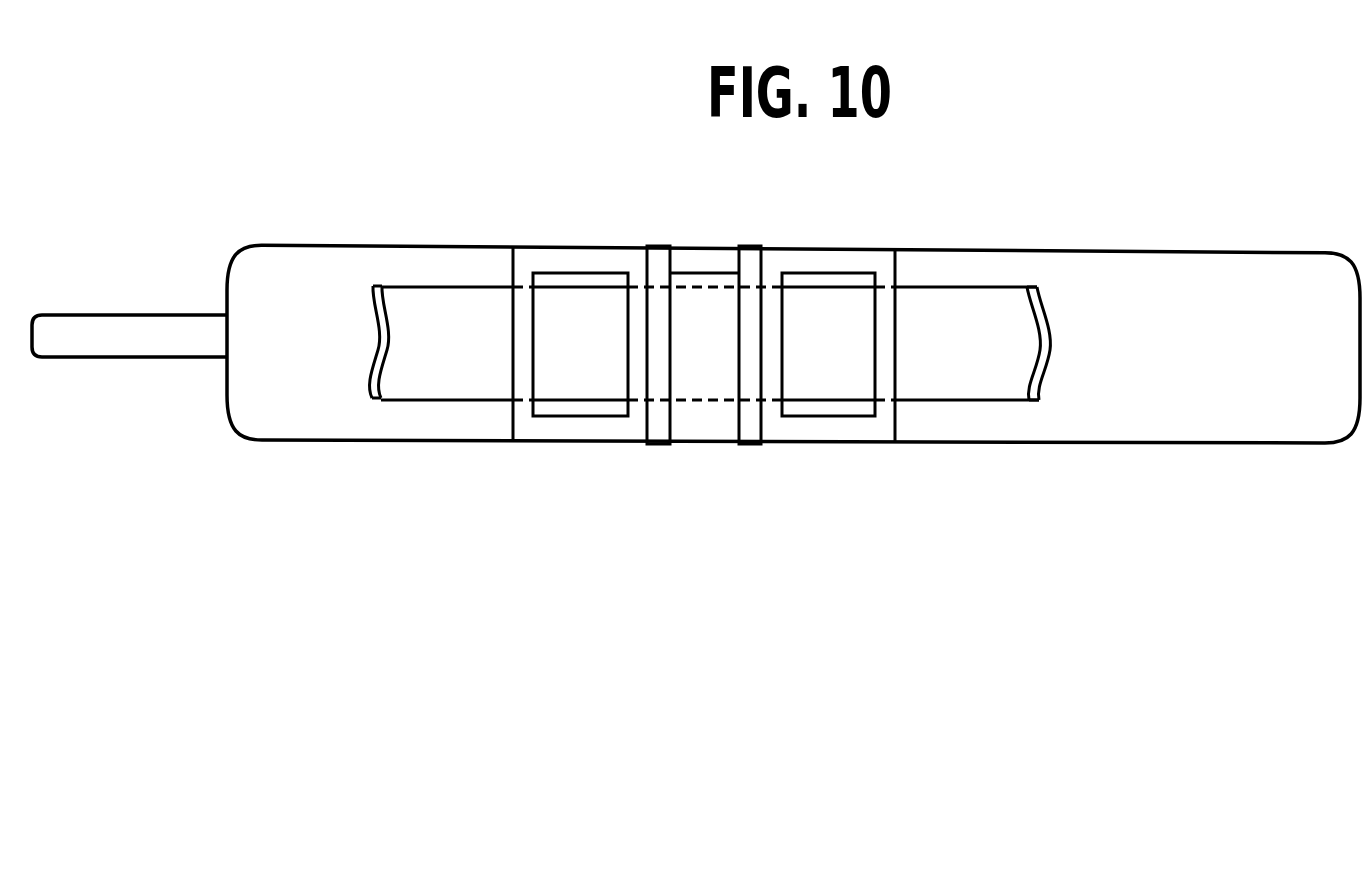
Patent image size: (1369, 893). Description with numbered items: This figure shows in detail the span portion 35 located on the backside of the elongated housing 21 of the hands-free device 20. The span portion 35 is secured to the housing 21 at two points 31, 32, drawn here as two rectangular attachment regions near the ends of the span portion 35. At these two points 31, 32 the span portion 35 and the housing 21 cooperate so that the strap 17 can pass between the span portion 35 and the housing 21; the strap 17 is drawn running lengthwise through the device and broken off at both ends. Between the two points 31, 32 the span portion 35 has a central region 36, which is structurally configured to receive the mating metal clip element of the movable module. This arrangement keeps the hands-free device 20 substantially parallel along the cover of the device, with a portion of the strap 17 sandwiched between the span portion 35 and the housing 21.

The strap 17 is at (960, 310).
The hands-free device 20 is at (452, 467).
The elongated housing 21 is at (1209, 428).
The first securing point 31 is at (537, 258).
The second securing point 32 is at (885, 265).
The span portion 35 is at (583, 226).
The central region 36 is at (708, 266).